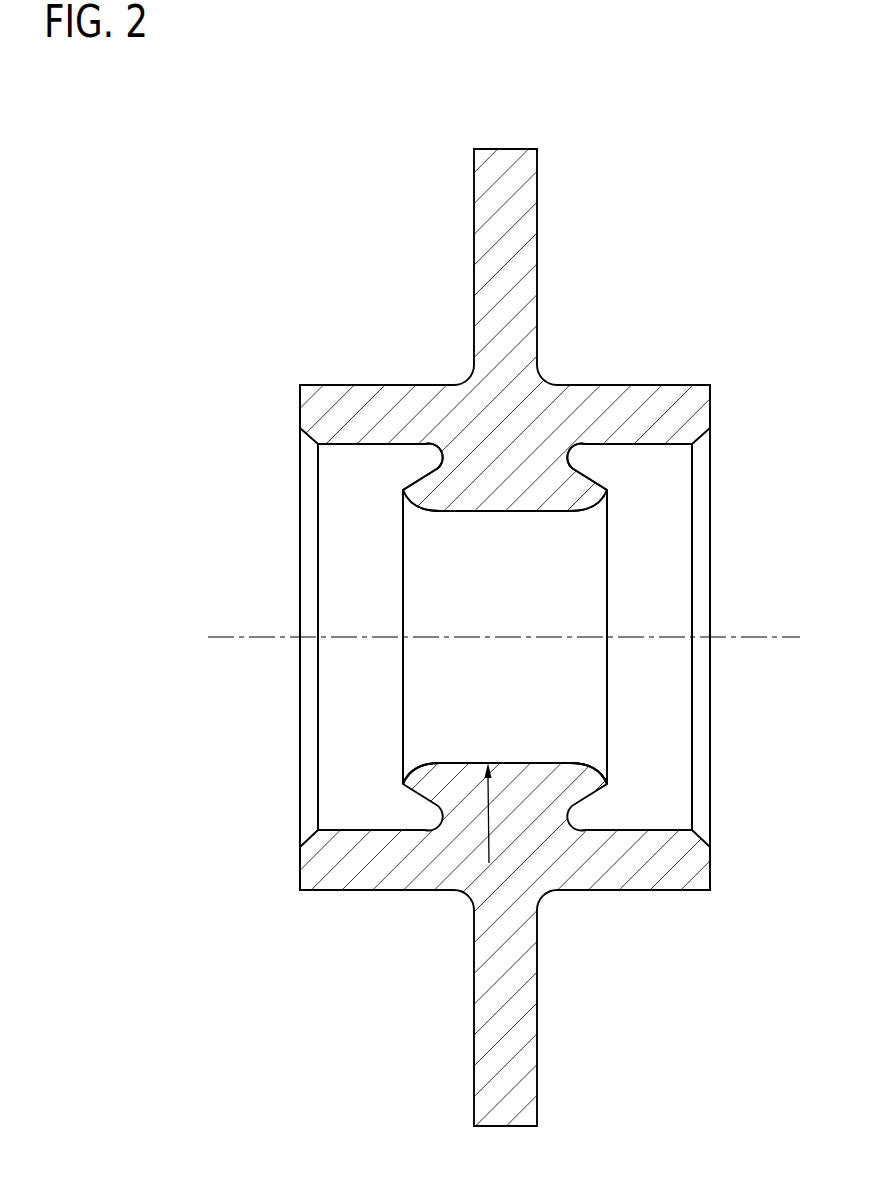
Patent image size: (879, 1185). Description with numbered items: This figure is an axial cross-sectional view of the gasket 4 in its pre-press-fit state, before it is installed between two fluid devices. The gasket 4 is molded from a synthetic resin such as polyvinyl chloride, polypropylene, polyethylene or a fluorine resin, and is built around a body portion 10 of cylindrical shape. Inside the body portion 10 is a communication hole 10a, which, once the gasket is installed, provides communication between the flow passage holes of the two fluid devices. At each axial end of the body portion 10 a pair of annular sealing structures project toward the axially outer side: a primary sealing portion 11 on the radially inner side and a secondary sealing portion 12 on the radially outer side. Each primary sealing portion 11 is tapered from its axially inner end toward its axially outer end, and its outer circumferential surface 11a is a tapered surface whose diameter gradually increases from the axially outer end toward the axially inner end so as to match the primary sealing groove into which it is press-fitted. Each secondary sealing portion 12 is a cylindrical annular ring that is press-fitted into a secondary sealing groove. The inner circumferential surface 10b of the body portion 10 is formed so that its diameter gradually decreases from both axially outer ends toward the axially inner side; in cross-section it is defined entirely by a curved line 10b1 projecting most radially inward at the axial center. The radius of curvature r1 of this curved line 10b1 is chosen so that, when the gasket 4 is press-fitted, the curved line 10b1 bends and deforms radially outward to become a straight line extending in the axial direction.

The gasket 4 is at (432, 148).
The body portion 10 is at (507, 503).
The communication hole 10a is at (528, 622).
The inner circumferential surface 10b is at (506, 763).
The curved line 10b1 is at (505, 715).
The primary sealing portion 11 is at (411, 497).
The outer circumferential surface 11a is at (427, 463).
The secondary sealing portion 12 is at (342, 393).
The radius of curvature r1 is at (489, 817).